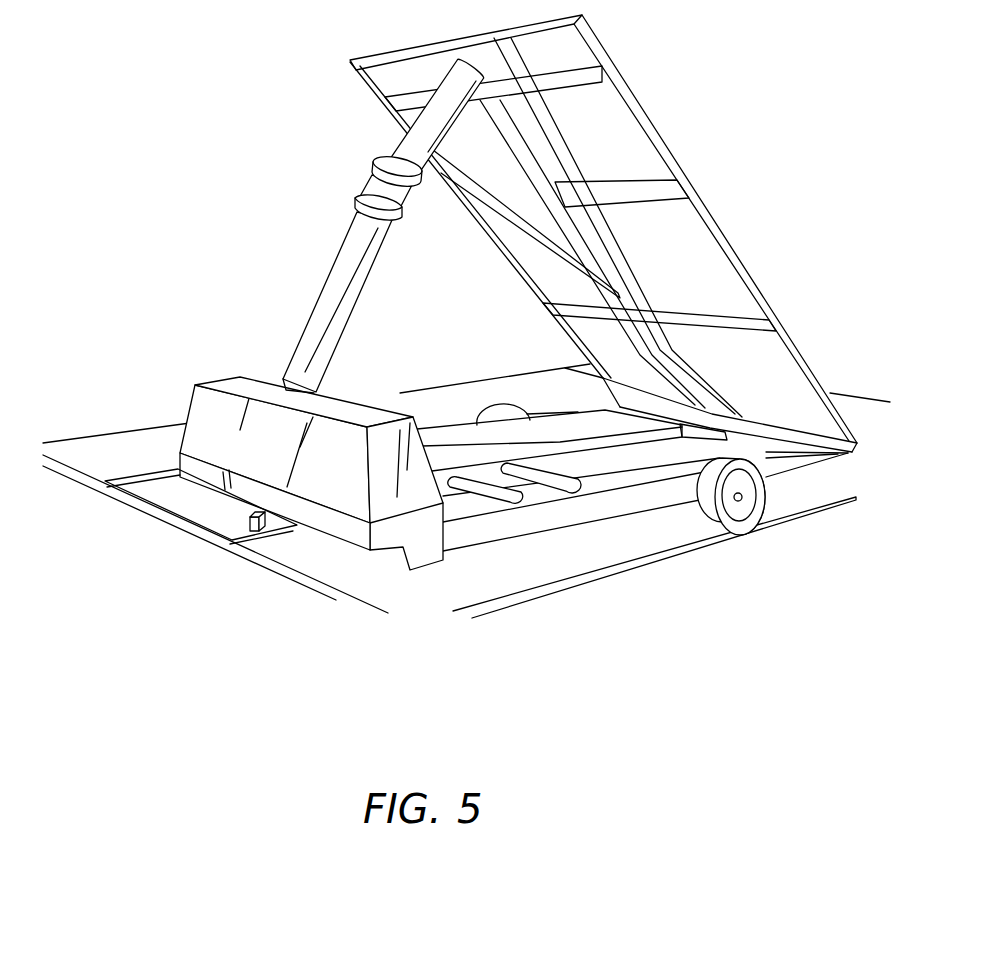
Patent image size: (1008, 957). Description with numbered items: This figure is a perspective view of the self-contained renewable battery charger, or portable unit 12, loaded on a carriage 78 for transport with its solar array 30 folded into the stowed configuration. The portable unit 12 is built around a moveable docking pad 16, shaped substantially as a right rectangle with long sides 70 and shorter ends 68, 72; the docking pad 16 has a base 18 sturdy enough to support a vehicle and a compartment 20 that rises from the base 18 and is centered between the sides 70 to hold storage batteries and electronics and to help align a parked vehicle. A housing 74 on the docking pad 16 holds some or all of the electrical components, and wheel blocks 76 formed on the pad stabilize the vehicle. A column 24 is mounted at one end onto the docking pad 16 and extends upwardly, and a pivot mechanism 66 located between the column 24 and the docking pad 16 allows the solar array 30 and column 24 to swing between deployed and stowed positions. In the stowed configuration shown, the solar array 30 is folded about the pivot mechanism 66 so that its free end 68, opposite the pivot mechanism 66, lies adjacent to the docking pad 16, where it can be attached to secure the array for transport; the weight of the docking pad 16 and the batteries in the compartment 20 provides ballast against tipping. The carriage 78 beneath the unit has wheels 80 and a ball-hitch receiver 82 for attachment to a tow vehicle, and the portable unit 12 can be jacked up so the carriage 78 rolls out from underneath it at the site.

The portable unit 12 is at (195, 208).
The docking pad 16 is at (455, 513).
The base 18 is at (472, 432).
The compartment 20 is at (587, 447).
The column 24 is at (305, 330).
The solar array 30 is at (660, 130).
The pivot mechanism 66 is at (283, 377).
The free end 68 is at (830, 440).
The long sides 70 is at (655, 490).
The shorter end 72 is at (347, 530).
The housing 74 is at (212, 428).
The wheel blocks 76 is at (557, 483).
The carriage 78 is at (267, 520).
The wheels 80 is at (740, 530).
The ball-hitch receiver 82 is at (238, 528).